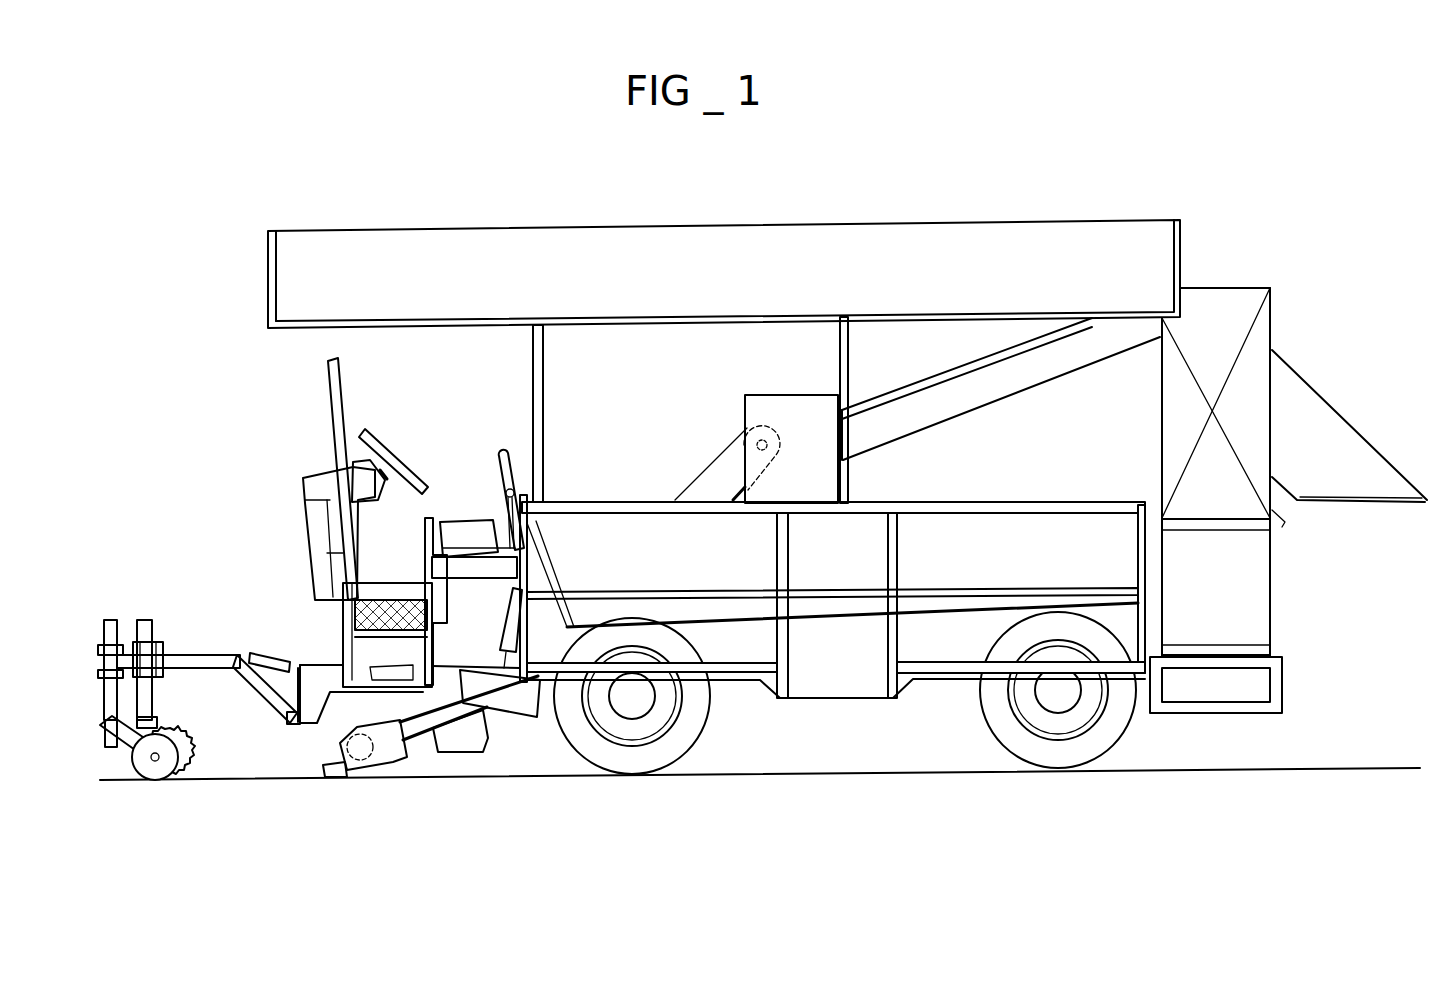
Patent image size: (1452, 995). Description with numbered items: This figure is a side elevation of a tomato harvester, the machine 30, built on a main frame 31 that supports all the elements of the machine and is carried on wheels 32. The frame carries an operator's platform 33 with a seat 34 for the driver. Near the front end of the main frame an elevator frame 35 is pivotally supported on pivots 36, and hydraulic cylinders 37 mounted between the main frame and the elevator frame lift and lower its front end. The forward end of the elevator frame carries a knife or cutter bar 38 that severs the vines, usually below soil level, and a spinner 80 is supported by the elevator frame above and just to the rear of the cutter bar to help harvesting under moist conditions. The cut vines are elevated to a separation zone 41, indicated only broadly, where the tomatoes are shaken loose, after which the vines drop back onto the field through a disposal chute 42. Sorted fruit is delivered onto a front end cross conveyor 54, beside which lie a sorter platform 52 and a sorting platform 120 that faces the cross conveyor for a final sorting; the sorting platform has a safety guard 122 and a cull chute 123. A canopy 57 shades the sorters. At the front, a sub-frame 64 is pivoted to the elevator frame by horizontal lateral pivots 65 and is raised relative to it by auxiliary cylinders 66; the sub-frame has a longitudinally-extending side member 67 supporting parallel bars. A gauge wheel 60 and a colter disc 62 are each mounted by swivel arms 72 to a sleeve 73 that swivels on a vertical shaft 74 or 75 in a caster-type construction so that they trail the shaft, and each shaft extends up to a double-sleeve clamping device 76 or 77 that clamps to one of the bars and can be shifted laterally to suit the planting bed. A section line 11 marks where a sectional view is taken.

The section line 11 is at (643, 523).
The machine 30 is at (1205, 262).
The main frame 31 is at (853, 700).
The wheels 32 is at (686, 736).
The operator's platform 33 is at (393, 580).
The seat 34 is at (481, 522).
The elevator frame 35 is at (376, 728).
The pivots 36 is at (755, 447).
The hydraulic cylinders 37 is at (508, 630).
The knife or cutter bar 38 is at (322, 771).
The separation zone 41 is at (925, 395).
The disposal chute 42 is at (1337, 440).
The sorter platform 52 is at (937, 660).
The front end cross conveyor 54 is at (498, 572).
The canopy 57 is at (862, 235).
The gauge wheel 60 is at (158, 775).
The colter disc 62 is at (192, 742).
The sub-frame 64 is at (199, 646).
The horizontal lateral pivots 65 is at (287, 720).
The auxiliary cylinders 66 is at (272, 663).
The side member 67 is at (213, 657).
The swivel arms 72 is at (133, 748).
The sleeve 73 is at (158, 722).
The vertical shaft 74 is at (108, 620).
The vertical shaft 75 is at (148, 620).
The double-sleeve clamping device 76 is at (119, 645).
The double-sleeve clamping device 77 is at (158, 650).
The spinner 80 is at (386, 772).
The sorting platform 120 is at (366, 670).
The safety guard 122 is at (353, 616).
The cull chute 123 is at (440, 604).